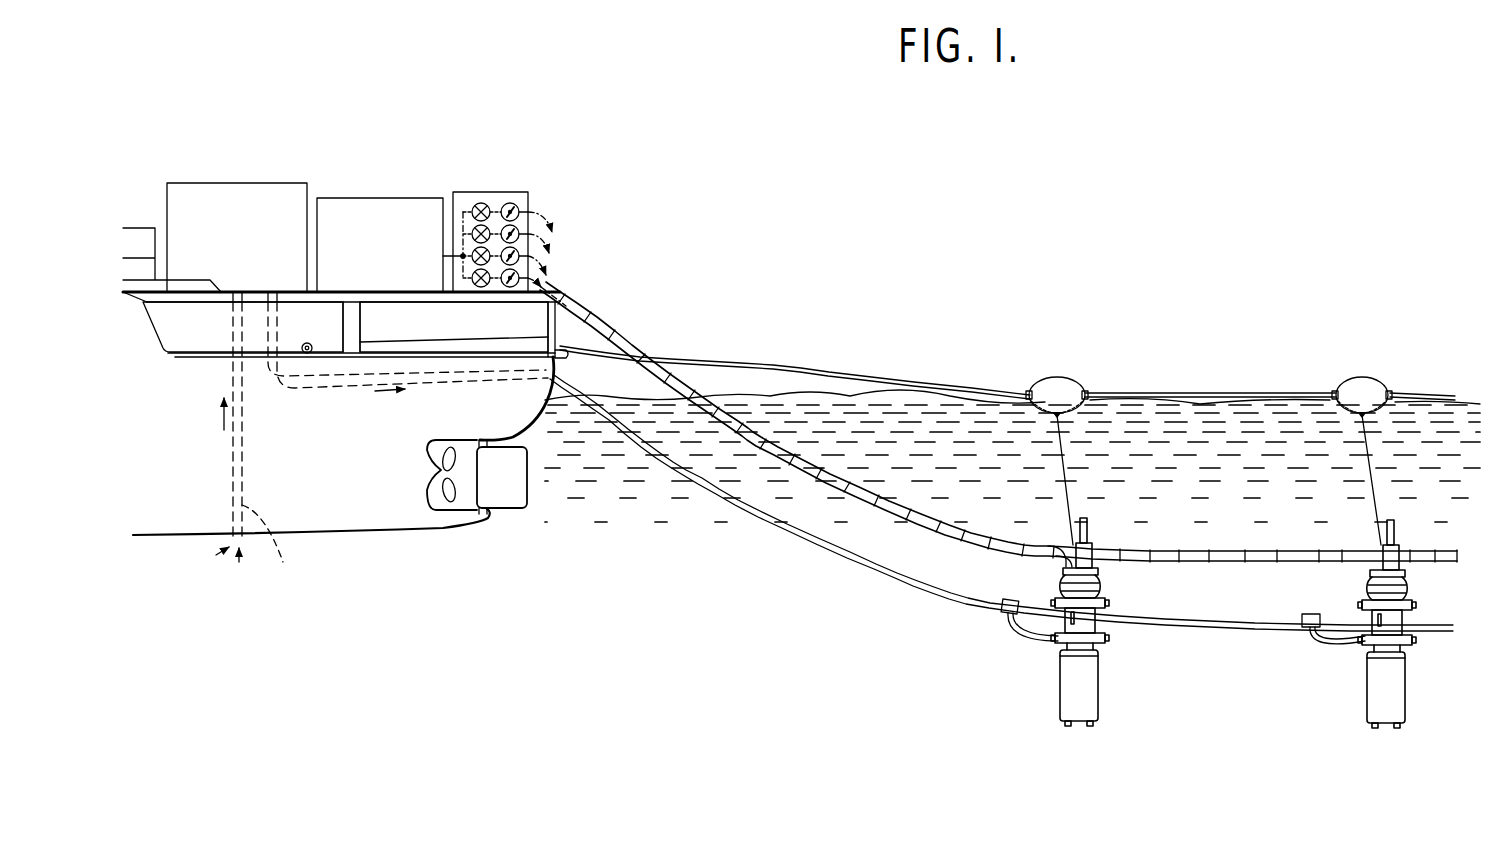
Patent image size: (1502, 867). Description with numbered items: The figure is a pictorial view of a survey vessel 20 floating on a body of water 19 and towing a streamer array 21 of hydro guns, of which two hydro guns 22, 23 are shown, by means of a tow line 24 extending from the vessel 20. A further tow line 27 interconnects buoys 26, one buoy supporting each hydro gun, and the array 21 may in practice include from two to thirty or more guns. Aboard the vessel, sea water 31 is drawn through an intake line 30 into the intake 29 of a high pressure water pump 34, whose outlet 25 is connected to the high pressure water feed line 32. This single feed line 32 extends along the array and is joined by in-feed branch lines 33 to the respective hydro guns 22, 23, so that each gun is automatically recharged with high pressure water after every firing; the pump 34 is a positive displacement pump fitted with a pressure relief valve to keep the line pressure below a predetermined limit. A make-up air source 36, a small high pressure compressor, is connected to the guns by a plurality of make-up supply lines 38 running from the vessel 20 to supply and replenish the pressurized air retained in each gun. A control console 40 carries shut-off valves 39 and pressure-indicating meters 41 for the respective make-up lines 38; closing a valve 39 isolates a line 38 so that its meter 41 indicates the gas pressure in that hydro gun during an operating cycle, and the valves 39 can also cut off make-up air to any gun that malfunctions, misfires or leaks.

The body of water 19 is at (1238, 479).
The survey vessel 20 is at (577, 124).
The streamer array 21 is at (830, 689).
The hydro gun 22 is at (1034, 693).
The hydro gun 23 is at (1329, 698).
The tow line 24 is at (841, 368).
The outlet 25 is at (278, 305).
The buoy 26 is at (1066, 377).
The tow line 27 is at (1168, 394).
The intake 29 is at (231, 305).
The intake line 30 is at (277, 543).
The sea water 31 is at (232, 556).
The high pressure water feed line 32 is at (772, 523).
The in-feed branch line 33 is at (1036, 645).
The high pressure water pump 34 is at (284, 184).
The make-up air source 36 is at (380, 198).
The make-up supply line 38 is at (898, 509).
The shut-off valve 39 is at (483, 200).
The control console 40 is at (547, 191).
The pressure-indicating meter 41 is at (515, 200).